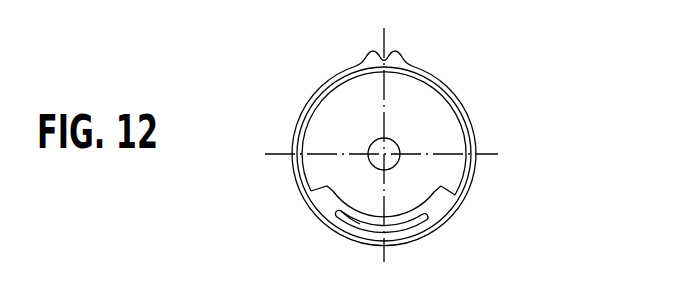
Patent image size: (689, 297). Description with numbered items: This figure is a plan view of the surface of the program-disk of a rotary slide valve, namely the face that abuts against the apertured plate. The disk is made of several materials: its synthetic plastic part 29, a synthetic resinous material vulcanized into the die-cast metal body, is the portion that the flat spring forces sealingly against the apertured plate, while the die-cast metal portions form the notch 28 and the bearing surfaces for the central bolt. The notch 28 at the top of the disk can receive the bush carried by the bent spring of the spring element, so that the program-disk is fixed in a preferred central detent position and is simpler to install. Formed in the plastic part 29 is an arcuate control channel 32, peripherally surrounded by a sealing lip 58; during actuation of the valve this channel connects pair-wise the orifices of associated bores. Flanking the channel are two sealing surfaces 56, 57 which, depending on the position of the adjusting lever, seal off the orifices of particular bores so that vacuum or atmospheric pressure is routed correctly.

The notch 28 is at (383, 58).
The synthetic plastic part of the program-disk 29 is at (467, 106).
The control channel 32 is at (410, 225).
The sealing surface 56 is at (328, 197).
The sealing surface 57 is at (440, 203).
The sealing lip 58 is at (355, 218).